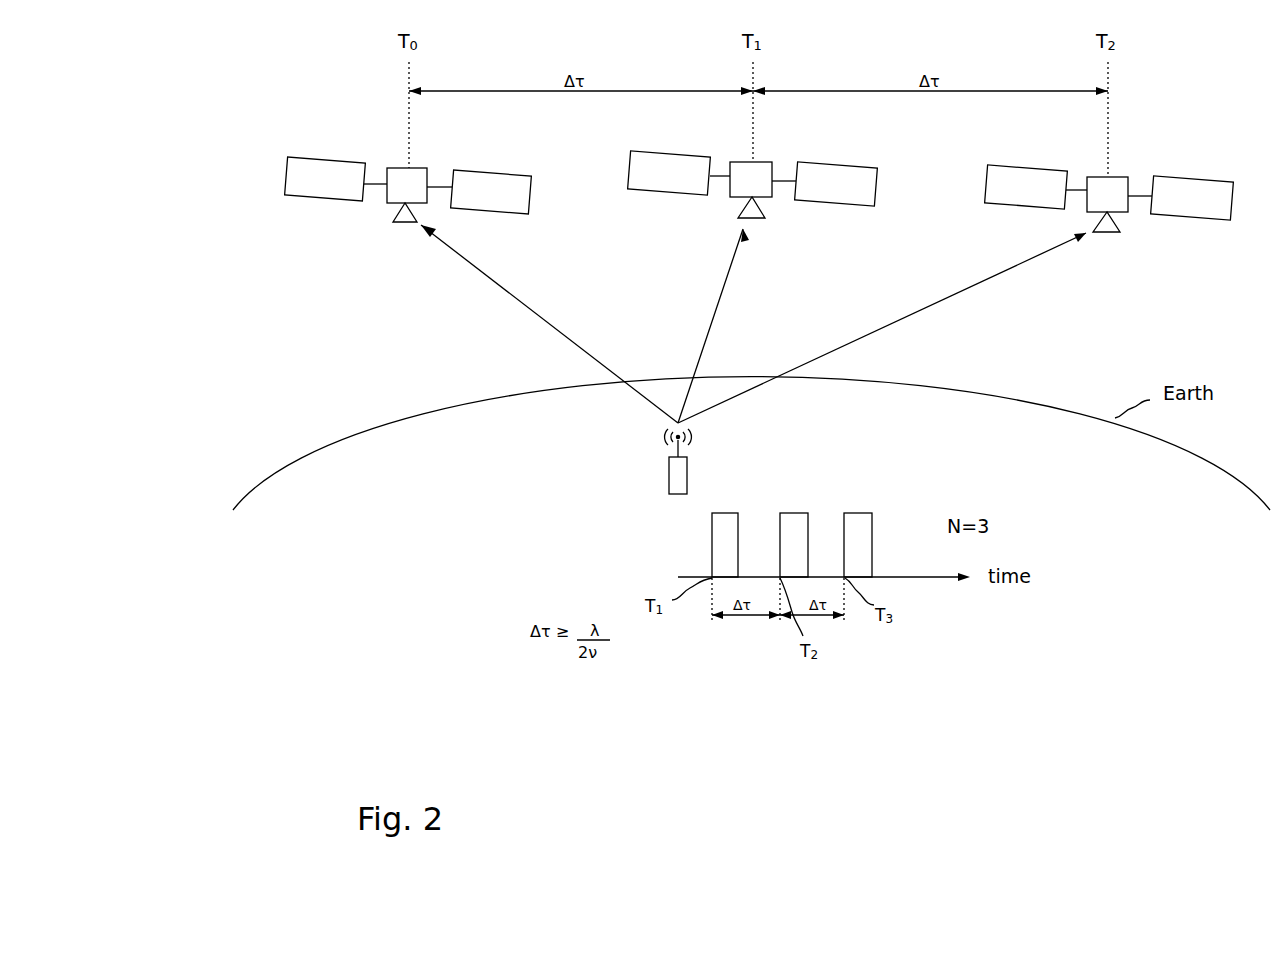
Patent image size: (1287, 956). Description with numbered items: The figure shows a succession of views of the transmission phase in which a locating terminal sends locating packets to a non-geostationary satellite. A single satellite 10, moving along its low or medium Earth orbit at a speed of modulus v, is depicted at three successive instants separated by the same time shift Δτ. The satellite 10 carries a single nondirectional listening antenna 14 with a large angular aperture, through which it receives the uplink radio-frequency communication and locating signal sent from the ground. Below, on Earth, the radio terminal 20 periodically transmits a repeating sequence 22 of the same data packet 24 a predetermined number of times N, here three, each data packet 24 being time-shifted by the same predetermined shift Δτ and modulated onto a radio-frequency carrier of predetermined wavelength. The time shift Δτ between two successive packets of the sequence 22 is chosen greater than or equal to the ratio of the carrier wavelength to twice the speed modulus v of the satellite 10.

The satellite 10 is at (427, 170).
The listening antenna 14 is at (395, 218).
The radio terminal 20 is at (668, 472).
The repeating sequence 22 is at (682, 526).
The data packet 24 is at (724, 513).